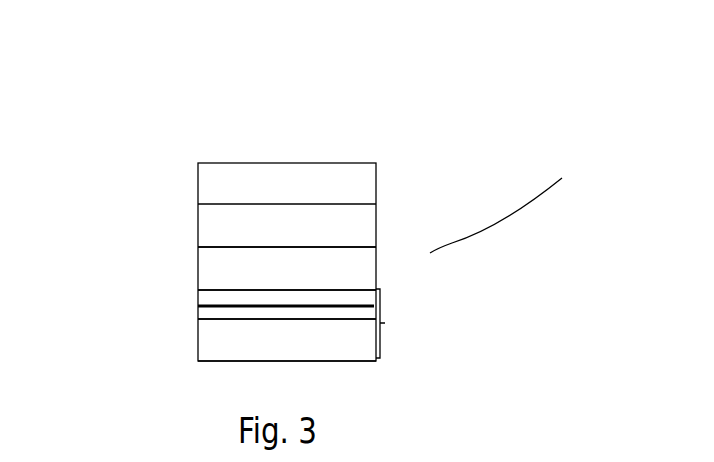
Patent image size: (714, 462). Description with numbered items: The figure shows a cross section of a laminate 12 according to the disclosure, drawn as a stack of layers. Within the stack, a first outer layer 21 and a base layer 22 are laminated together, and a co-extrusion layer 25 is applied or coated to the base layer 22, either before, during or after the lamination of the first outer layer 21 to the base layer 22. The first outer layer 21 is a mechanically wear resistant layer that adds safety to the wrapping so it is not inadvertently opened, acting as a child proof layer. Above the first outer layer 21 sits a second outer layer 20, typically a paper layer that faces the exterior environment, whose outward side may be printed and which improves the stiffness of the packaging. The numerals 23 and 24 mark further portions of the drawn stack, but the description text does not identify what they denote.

The laminate 12 is at (513, 195).
The second outer layer 20 is at (287, 142).
The first outer layer 21 is at (175, 226).
The base layer 22 is at (175, 272).
The active layer 23 is at (192, 321).
The bottom layer 24 is at (190, 373).
The co-extrusion layer 25 is at (419, 323).